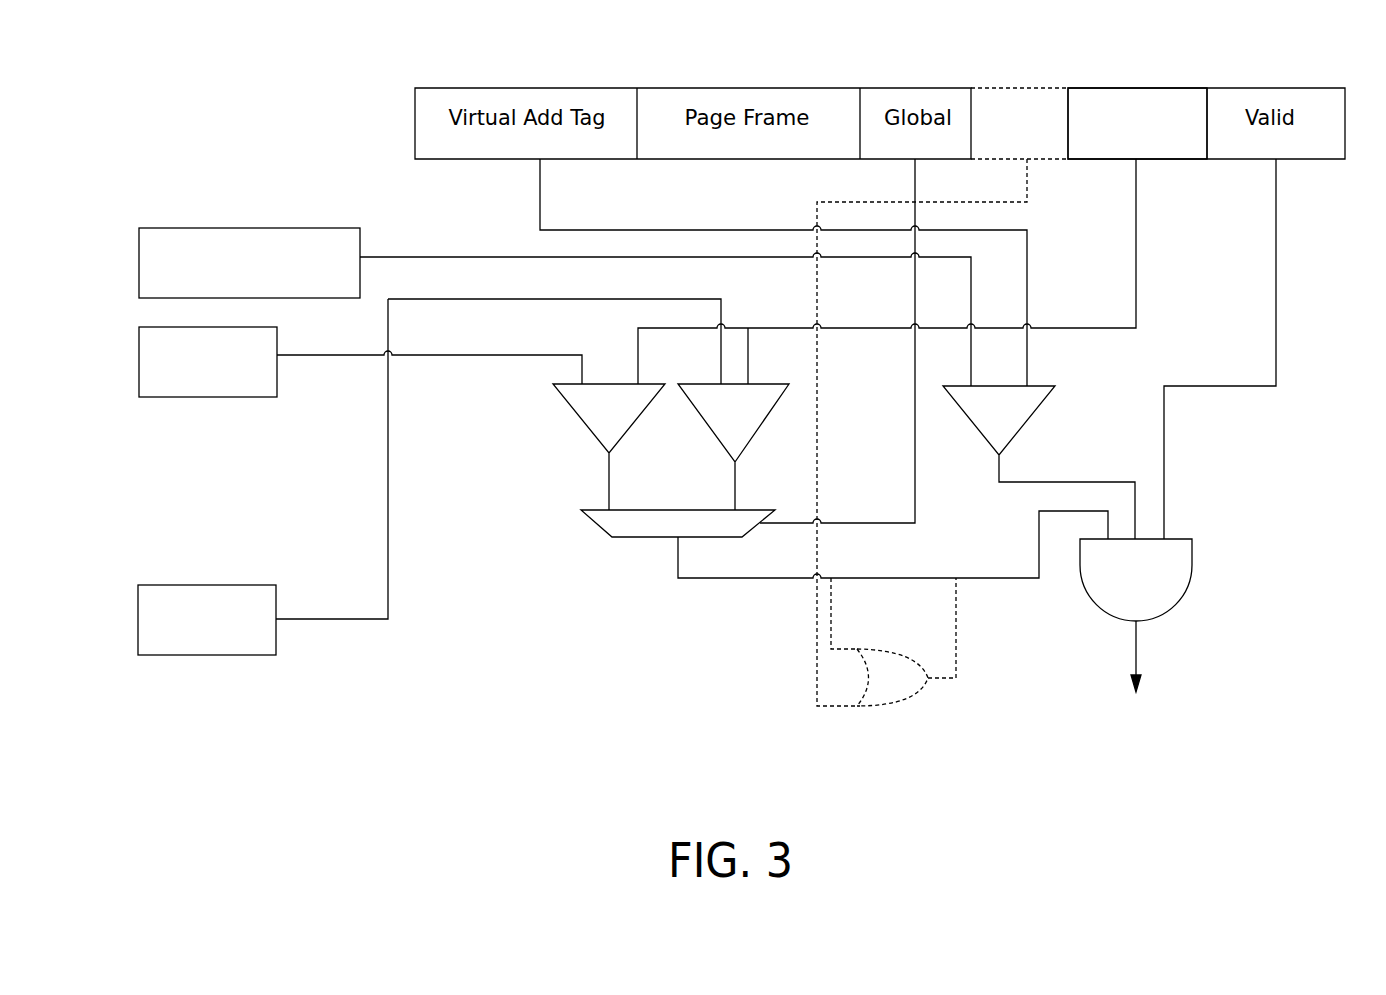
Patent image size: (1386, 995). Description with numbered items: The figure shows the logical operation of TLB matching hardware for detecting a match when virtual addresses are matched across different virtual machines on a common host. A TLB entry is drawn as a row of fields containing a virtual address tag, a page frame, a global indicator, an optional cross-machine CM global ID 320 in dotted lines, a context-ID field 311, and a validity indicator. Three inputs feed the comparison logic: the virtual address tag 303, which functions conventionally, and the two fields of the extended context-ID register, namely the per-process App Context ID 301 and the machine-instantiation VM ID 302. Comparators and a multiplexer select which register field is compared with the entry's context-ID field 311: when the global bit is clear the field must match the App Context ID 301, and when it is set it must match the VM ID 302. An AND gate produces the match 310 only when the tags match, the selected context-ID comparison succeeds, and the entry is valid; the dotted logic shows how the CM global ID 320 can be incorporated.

The App Context ID 301 is at (138, 606).
The VM ID 302 is at (139, 355).
The virtual address tag 303 is at (139, 257).
The match 310 is at (1134, 738).
The context-ID field 311 is at (1136, 88).
The CM global ID 320 is at (1012, 88).